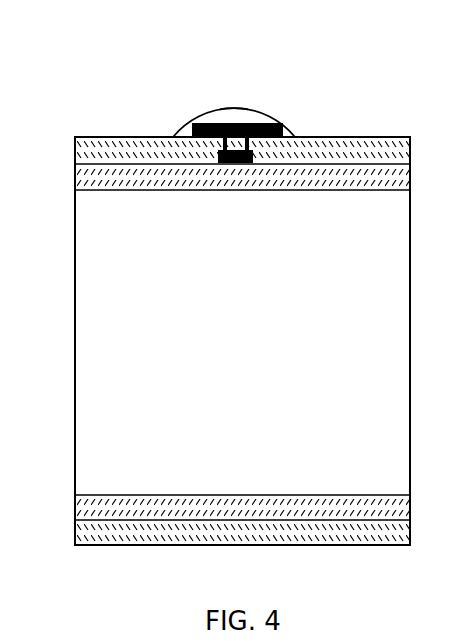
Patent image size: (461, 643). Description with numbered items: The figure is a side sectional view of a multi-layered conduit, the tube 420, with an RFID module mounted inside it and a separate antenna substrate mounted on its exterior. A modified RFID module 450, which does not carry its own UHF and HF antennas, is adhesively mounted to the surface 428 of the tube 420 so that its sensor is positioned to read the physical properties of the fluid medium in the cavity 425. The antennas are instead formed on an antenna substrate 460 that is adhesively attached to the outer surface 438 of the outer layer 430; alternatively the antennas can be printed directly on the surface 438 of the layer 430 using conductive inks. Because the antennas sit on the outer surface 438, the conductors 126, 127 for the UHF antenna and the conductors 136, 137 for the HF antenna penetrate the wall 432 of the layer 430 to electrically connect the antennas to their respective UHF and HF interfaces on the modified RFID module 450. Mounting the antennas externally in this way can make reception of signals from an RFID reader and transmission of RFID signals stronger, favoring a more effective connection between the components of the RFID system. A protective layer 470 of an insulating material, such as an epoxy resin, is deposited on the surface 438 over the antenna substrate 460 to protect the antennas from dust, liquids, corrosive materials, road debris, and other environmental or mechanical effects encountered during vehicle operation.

The cavity 425 is at (262, 343).
The outer surface 438 is at (122, 137).
The surface 428 is at (74, 152).
The wall 432 is at (363, 158).
The outer layer 430 is at (403, 131).
The antenna substrate 460 is at (193, 118).
The protective layer 470 is at (237, 109).
The conductor 136 is at (278, 126).
The conductor 137 is at (256, 152).
The conductor 126 is at (223, 144).
The conductor 127 is at (218, 152).
The modified RFID module 450 is at (232, 163).
The tube 420 is at (188, 196).